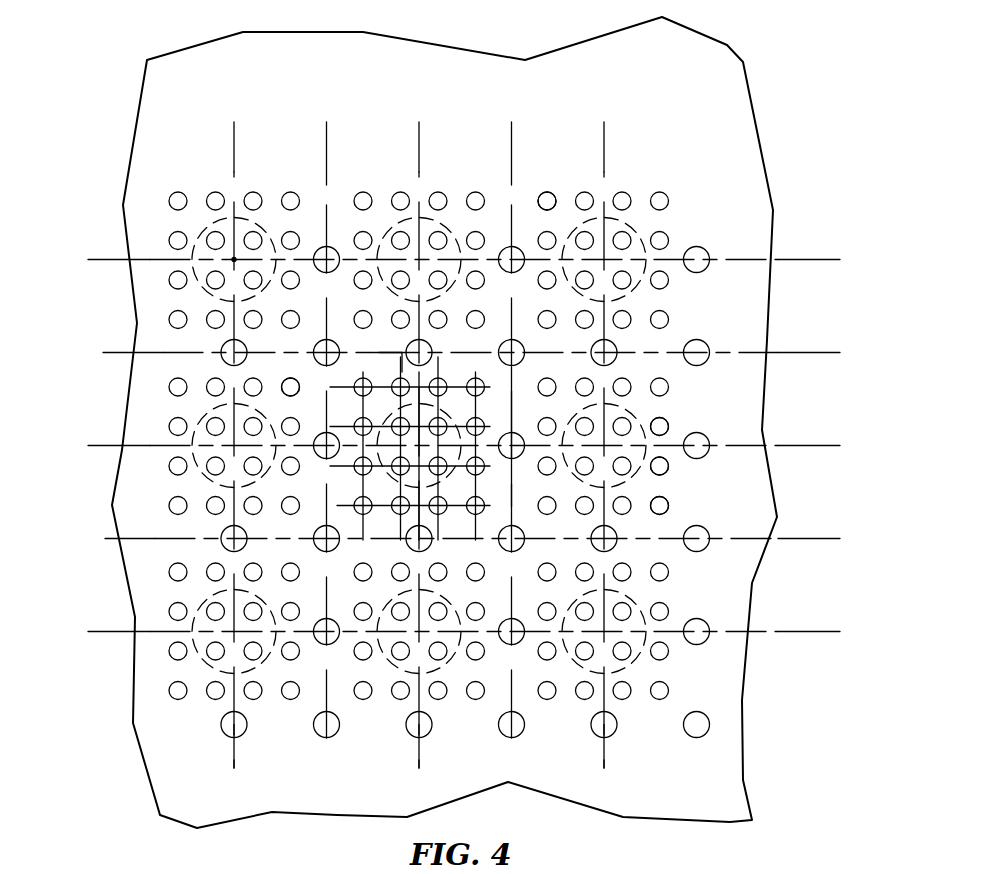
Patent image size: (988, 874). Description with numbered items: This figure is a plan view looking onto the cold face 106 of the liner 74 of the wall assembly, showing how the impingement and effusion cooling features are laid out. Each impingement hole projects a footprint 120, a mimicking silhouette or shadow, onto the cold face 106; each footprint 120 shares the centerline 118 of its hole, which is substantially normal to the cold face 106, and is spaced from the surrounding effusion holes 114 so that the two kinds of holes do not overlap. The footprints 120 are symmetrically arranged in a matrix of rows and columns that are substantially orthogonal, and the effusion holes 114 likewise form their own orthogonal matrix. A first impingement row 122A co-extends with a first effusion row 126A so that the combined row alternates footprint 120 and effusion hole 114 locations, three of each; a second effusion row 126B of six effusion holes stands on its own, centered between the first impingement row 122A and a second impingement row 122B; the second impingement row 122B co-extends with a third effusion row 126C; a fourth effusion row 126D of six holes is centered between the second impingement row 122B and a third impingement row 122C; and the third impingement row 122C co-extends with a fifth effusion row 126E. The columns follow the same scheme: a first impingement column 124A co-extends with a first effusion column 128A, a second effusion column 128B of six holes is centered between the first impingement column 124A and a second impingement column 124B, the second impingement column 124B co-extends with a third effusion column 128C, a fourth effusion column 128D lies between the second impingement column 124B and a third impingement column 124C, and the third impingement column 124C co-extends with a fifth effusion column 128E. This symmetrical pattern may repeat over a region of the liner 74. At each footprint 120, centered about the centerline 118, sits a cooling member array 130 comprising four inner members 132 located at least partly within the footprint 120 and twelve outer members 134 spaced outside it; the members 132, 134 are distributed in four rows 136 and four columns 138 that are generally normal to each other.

The liner 74 is at (782, 148).
The cold face 106 is at (527, 202).
The effusion hole 114 is at (700, 267).
The centerline 118 is at (235, 258).
The footprint 120 is at (650, 222).
The first impingement row 122A is at (107, 259).
The second impingement row 122B is at (98, 445).
The third impingement row 122C is at (98, 631).
The first impingement column 124A is at (234, 762).
The second impingement column 124B is at (418, 758).
The third impingement column 124C is at (605, 757).
The first effusion row 126A is at (835, 258).
The second effusion row 126B is at (827, 352).
The third effusion row 126C is at (832, 445).
The fourth effusion row 126D is at (817, 538).
The fifth effusion row 126E is at (800, 631).
The first effusion column 128A is at (233, 147).
The second effusion column 128B is at (326, 137).
The third effusion column 128C is at (418, 152).
The fourth effusion column 128D is at (510, 167).
The fifth effusion column 128E is at (604, 140).
The cooling member array 130 is at (675, 414).
The inner member 132 is at (630, 658).
The outer member 134 is at (670, 467).
The row 136 is at (345, 410).
The column 138 is at (363, 370).